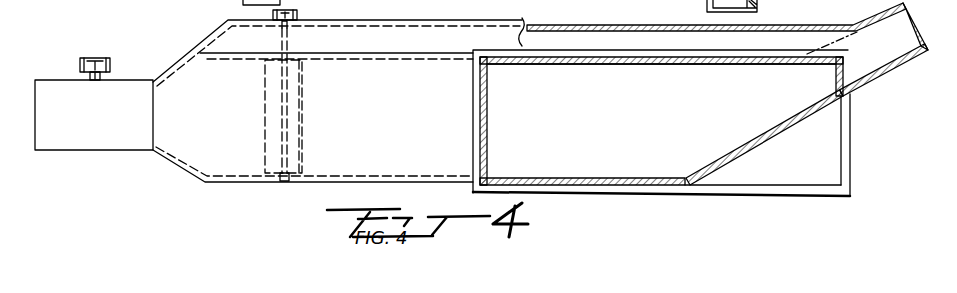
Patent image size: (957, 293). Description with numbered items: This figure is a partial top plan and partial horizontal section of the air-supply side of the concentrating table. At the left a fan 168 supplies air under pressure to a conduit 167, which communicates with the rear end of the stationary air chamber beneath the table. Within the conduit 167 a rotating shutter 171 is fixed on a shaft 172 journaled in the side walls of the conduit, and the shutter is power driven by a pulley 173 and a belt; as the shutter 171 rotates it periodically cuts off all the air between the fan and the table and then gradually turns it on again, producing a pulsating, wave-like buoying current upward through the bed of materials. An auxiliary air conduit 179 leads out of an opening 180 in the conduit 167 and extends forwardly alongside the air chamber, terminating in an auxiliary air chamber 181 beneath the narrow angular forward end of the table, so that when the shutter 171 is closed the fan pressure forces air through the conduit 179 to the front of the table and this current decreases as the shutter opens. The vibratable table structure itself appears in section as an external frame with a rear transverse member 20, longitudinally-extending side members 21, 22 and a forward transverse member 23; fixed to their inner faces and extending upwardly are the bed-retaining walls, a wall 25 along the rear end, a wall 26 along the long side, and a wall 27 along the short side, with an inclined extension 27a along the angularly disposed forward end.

The rear transverse member 20 is at (476, 133).
The side member 21 is at (670, 54).
The side member 22 is at (783, 173).
The forward transverse member 23 is at (847, 133).
The bed-retaining wall 25 is at (487, 118).
The bed-retaining wall 26 is at (611, 63).
The bed-retaining wall 27 is at (607, 155).
The inclined deflector plate 27a is at (745, 148).
The conduit 167 is at (388, 150).
The fan 168 is at (65, 107).
The rotating shutter 171 is at (297, 123).
The shaft 172 is at (285, 145).
The pulley 173 is at (272, 14).
The auxiliary air conduit 179 is at (548, 42).
The opening 180 is at (218, 58).
The auxiliary air chamber 181 is at (876, 55).